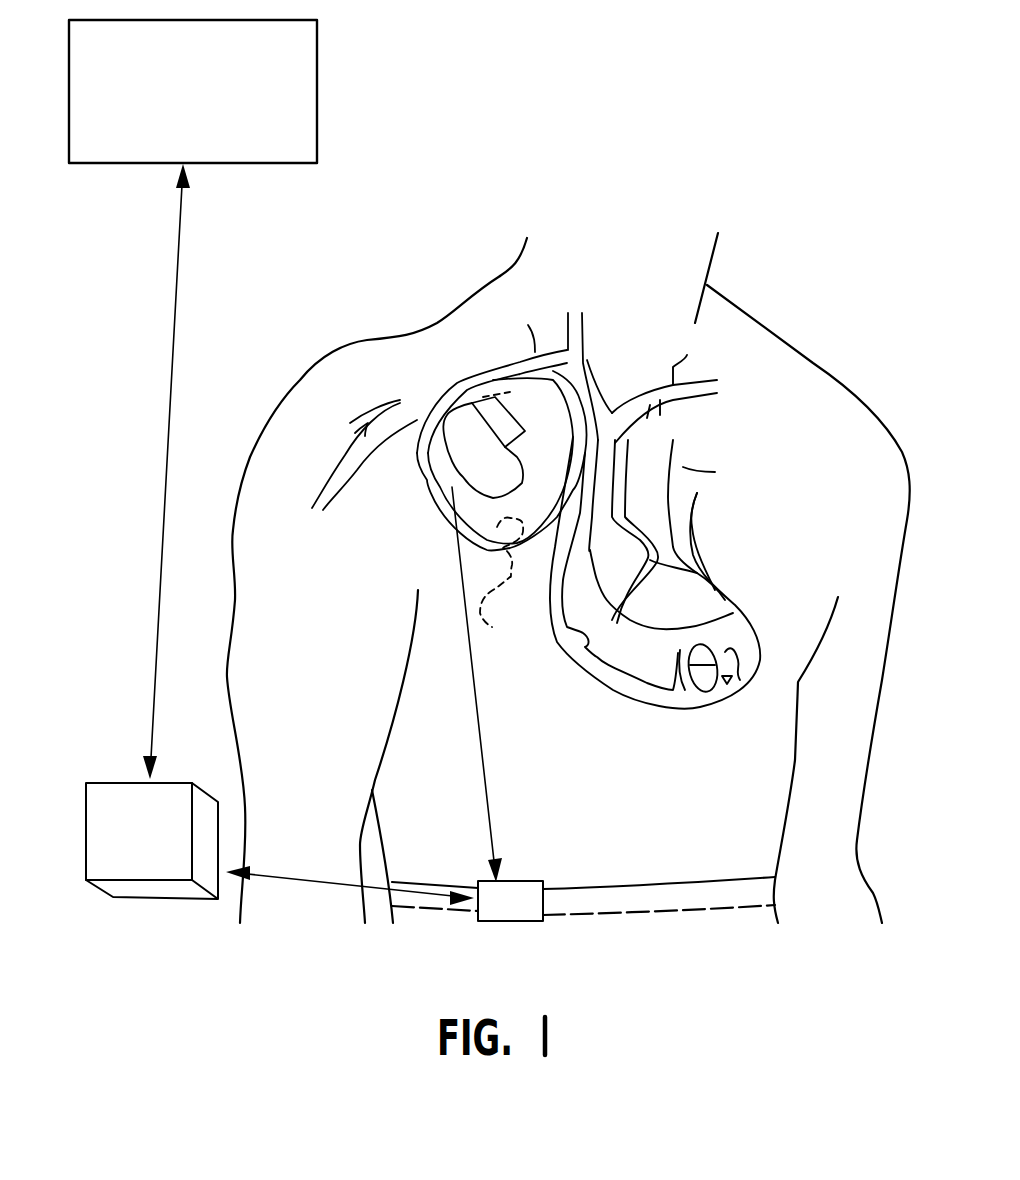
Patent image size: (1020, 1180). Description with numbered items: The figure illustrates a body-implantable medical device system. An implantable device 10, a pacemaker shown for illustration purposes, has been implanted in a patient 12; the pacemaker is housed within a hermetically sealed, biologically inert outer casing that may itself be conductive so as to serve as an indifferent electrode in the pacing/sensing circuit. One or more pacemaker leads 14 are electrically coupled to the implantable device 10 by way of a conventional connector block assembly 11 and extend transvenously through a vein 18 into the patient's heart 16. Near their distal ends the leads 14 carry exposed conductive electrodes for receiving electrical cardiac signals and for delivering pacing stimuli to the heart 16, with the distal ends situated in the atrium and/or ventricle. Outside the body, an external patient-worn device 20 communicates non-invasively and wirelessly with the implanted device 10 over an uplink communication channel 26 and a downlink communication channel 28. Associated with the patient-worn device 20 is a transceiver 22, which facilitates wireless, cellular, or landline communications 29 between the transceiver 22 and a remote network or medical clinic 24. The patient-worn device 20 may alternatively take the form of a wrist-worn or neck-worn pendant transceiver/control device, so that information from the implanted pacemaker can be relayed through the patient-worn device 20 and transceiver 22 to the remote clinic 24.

The implantable device 10 is at (453, 468).
The connector block assembly 11 is at (490, 412).
The patient 12 is at (813, 363).
The pacemaker leads 14 is at (503, 523).
The heart 16 is at (668, 712).
The vein 18 is at (445, 336).
The external patient-worn device 20 is at (535, 878).
The transceiver 22 is at (123, 781).
The remote network or medical clinic 24 is at (317, 98).
The uplink communication channel 26 is at (470, 710).
The downlink communication channel 28 is at (330, 887).
The communications 29 is at (162, 495).